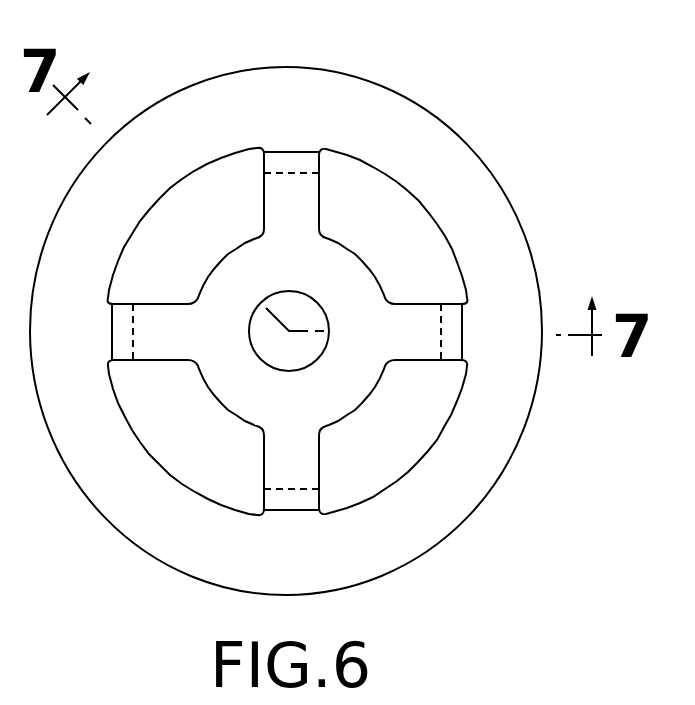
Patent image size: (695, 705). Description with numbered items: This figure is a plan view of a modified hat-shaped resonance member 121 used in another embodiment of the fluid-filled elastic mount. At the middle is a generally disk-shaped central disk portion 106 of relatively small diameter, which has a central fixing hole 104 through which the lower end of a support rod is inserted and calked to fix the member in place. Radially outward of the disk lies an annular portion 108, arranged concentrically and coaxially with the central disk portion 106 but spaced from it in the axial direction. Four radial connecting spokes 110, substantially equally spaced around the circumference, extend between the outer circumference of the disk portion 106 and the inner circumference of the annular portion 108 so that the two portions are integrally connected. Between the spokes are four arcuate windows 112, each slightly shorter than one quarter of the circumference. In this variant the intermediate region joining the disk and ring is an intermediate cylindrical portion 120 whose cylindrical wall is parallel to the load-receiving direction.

The central fixing hole 104 is at (299, 369).
The central disk portion 106 is at (209, 438).
The annular portion 108 is at (528, 206).
The radial connecting spokes 110 is at (151, 316).
The arcuate windows 112 is at (158, 195).
The intermediate cylindrical portion 120 is at (488, 341).
The resonance member 121 is at (192, 48).